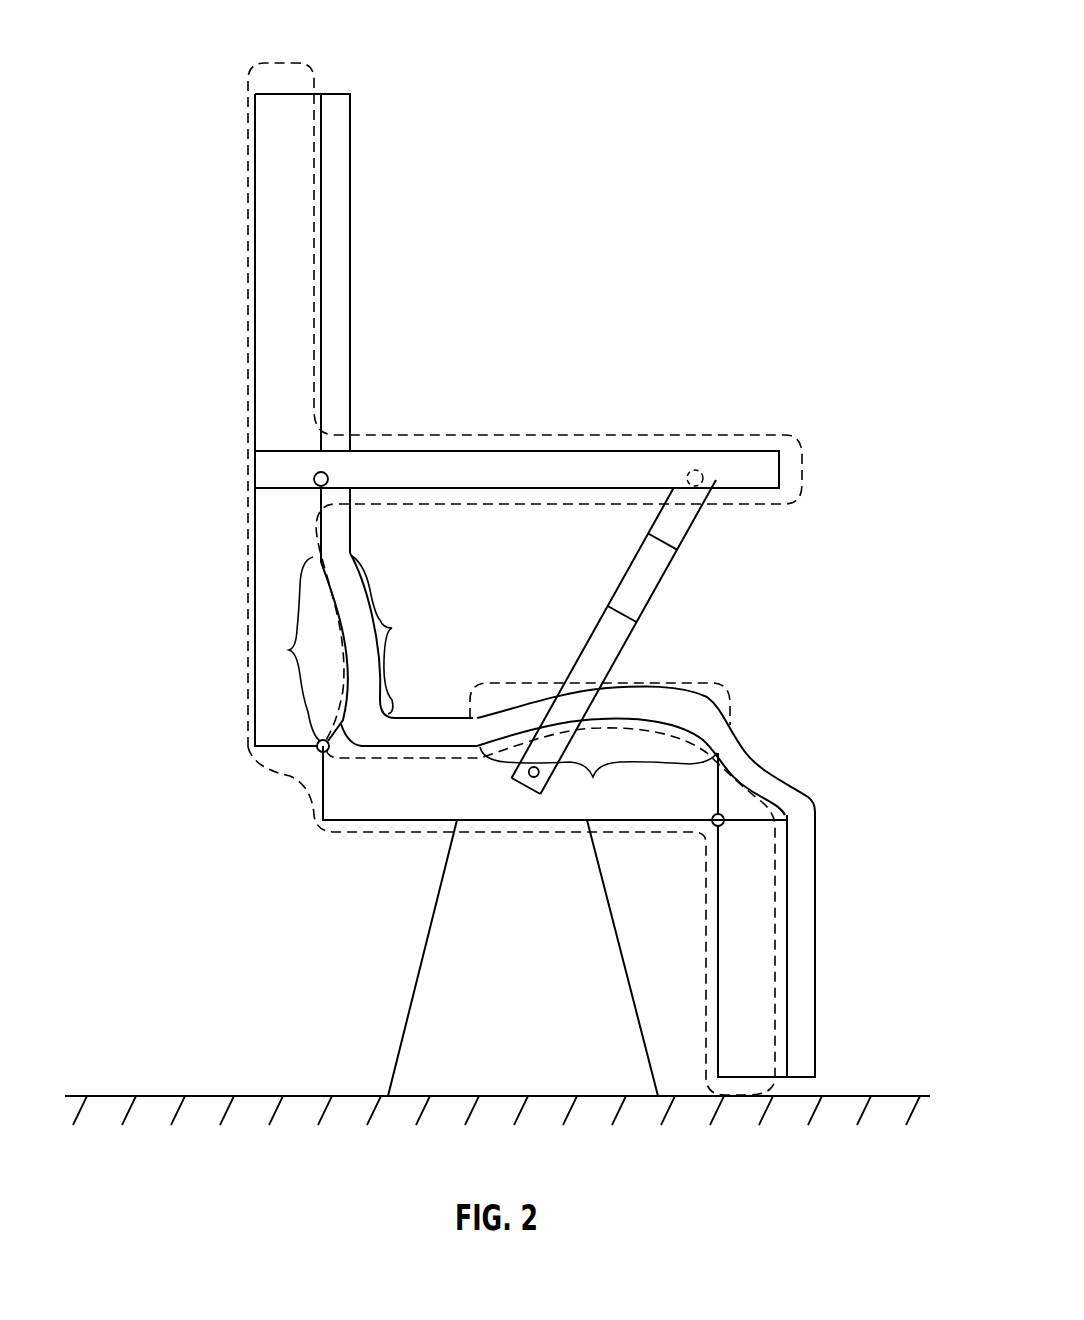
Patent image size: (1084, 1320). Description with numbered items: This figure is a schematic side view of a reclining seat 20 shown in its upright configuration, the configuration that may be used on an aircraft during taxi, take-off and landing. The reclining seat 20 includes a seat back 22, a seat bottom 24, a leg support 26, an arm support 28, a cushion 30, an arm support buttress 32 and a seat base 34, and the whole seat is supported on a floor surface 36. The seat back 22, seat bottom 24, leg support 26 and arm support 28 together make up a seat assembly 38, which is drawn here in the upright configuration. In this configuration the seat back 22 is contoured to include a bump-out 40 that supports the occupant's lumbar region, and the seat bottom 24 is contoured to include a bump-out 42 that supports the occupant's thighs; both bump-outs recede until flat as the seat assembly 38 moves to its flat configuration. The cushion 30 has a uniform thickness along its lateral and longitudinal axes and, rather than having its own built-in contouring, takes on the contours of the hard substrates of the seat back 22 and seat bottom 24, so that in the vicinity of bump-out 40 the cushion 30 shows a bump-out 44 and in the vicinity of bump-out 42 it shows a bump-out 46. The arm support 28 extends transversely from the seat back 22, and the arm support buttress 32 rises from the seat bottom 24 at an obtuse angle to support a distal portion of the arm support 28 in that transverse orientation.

The reclining seat 20 is at (802, 41).
The seat back 22 is at (255, 240).
The seat bottom 24 is at (353, 823).
The leg support 26 is at (718, 878).
The arm support 28 is at (518, 451).
The cushion 30 is at (332, 94).
The arm support buttress 32 is at (656, 588).
The seat base 34 is at (417, 977).
The floor surface 36 is at (168, 1096).
The seat assembly 38 is at (259, 66).
The bump-out 40 is at (290, 649).
The bump-out 42 is at (642, 749).
The bump-out 44 is at (389, 635).
The bump-out 46 is at (628, 688).